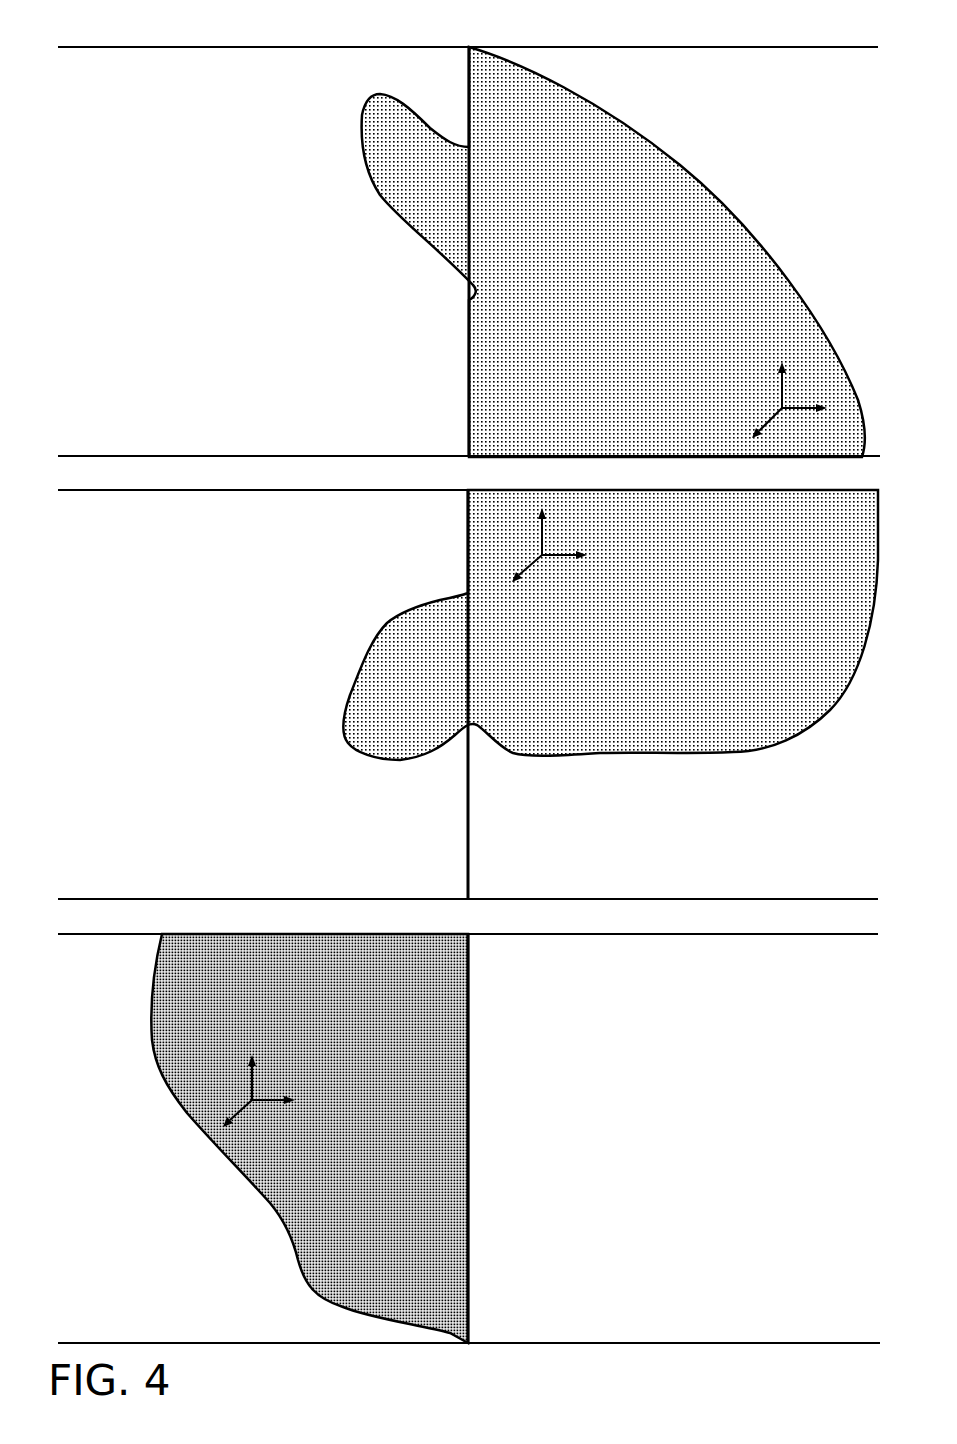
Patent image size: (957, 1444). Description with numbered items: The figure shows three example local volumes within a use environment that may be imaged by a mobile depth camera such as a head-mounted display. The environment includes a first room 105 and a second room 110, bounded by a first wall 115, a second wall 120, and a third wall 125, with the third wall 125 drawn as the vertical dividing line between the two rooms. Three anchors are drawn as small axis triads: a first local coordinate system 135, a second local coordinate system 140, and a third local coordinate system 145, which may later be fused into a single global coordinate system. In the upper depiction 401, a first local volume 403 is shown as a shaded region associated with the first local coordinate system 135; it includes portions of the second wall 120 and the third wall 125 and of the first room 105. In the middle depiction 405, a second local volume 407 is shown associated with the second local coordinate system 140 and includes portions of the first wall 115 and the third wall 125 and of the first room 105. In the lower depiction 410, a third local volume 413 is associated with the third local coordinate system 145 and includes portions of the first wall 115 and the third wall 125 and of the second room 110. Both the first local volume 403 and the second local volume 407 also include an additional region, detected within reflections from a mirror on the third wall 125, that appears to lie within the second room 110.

The first room 105 is at (871, 80).
The second room 110 is at (100, 86).
The first wall 115 is at (300, 48).
The second wall 120 is at (290, 455).
The third wall 125 is at (468, 380).
The first local coordinate system 135 is at (754, 386).
The second local coordinate system 140 is at (556, 586).
The third local coordinate system 145 is at (270, 1075).
The first view 401 is at (763, 56).
The first local volume 403 is at (526, 341).
The second view 405 is at (173, 497).
The second local volume 407 is at (843, 538).
The third view 410 is at (780, 942).
The third local volume 413 is at (421, 1279).